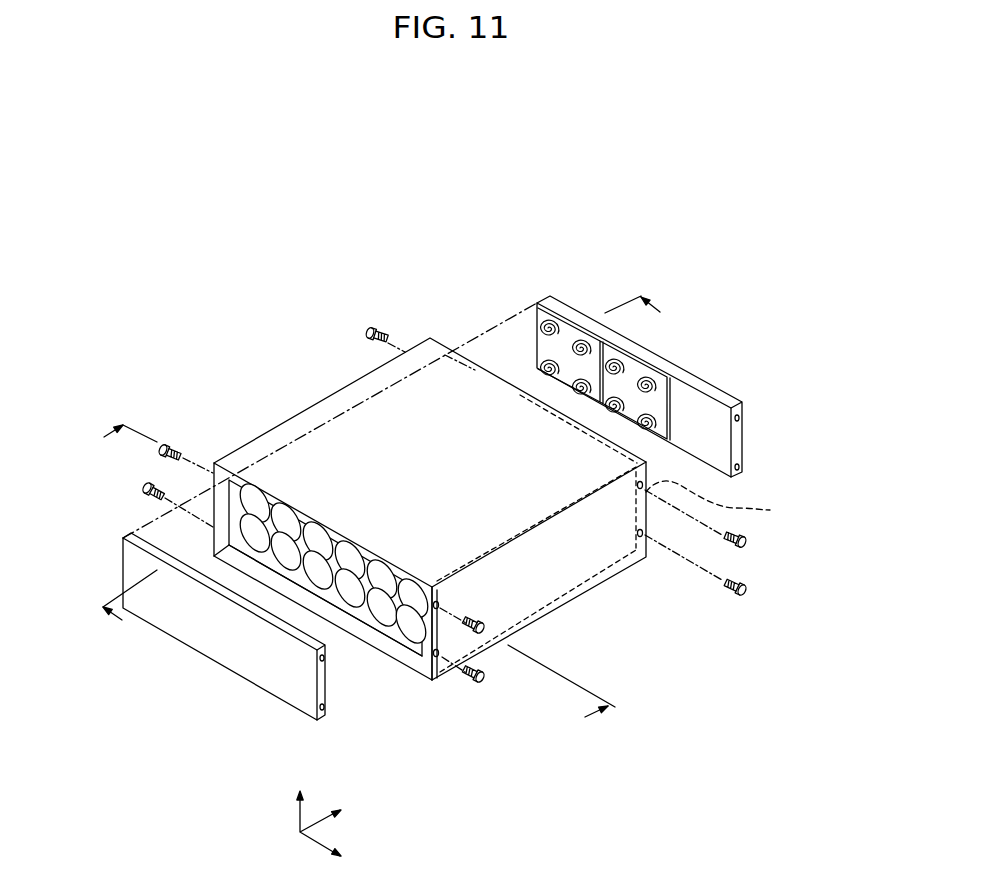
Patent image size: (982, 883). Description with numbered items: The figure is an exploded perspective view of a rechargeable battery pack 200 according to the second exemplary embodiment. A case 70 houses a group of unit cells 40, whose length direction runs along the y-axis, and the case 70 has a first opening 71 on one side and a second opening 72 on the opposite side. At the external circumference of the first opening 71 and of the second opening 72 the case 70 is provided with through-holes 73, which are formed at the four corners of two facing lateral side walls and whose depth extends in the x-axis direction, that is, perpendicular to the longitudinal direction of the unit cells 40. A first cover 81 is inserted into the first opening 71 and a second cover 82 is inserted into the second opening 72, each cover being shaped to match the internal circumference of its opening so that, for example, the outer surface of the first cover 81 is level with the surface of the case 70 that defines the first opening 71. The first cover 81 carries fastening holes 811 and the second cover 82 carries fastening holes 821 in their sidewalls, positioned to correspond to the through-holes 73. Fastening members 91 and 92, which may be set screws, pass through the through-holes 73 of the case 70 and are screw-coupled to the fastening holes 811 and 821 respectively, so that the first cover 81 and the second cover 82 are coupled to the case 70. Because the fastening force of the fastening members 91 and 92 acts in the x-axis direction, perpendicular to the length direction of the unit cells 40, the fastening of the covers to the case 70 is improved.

The rechargeable battery pack 200 is at (441, 161).
The unit cells 40 is at (284, 523).
The case 70 is at (587, 582).
The first opening 71 is at (397, 638).
The second opening 72 is at (722, 503).
The through-hole 73 is at (436, 657).
The first cover 81 is at (230, 662).
The fastening holes 811 is at (312, 716).
The second cover 82 is at (695, 385).
The fastening holes 821 is at (740, 418).
The fastening members 91 is at (483, 681).
The fastening members 92 is at (748, 588).